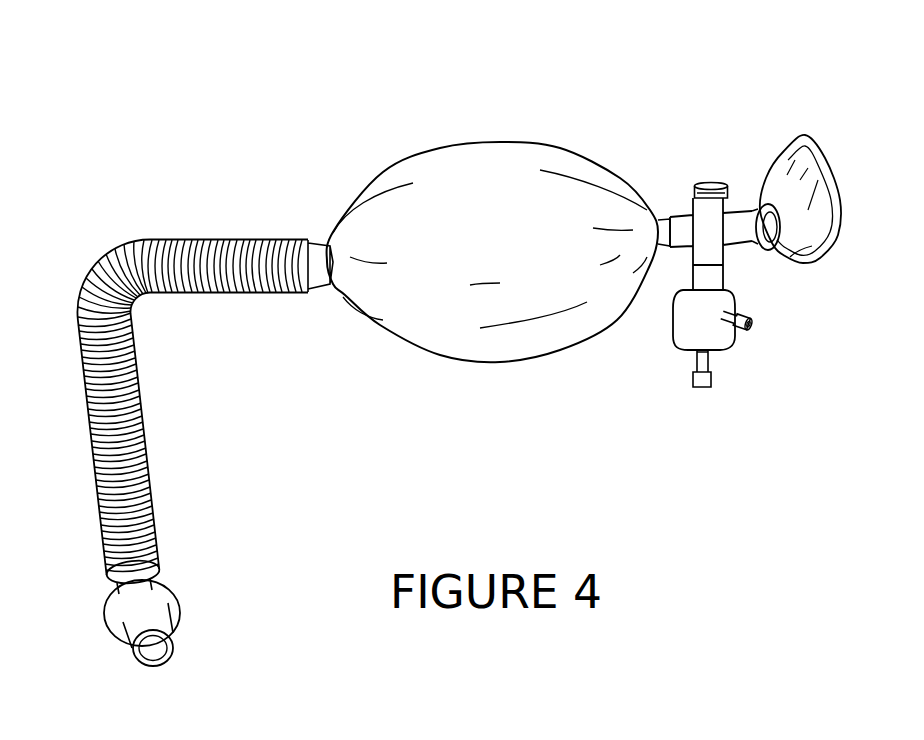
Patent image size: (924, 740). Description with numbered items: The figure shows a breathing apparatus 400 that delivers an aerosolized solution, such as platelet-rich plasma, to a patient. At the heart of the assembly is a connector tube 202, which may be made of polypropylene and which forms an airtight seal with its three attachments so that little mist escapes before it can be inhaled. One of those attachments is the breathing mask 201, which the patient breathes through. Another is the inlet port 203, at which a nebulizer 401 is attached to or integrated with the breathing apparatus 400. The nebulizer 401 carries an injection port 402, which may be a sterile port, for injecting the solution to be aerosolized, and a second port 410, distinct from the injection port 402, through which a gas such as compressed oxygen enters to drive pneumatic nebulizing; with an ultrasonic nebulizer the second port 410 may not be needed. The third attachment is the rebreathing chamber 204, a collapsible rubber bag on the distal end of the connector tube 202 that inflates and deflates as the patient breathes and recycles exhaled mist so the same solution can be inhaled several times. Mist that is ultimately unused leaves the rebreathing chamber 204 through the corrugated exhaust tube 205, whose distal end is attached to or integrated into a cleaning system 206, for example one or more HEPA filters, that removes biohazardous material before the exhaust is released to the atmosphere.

The breathing apparatus 400 is at (316, 94).
The breathing mask 201 is at (812, 177).
The connector tube 202 is at (717, 212).
The inlet port 203 is at (713, 282).
The rebreathing chamber 204 is at (515, 141).
The exhaust tube 205 is at (148, 318).
The cleaning system 206 is at (153, 607).
The nebulizer 401 is at (672, 331).
The injection port 402 is at (760, 329).
The second port 410 is at (707, 367).